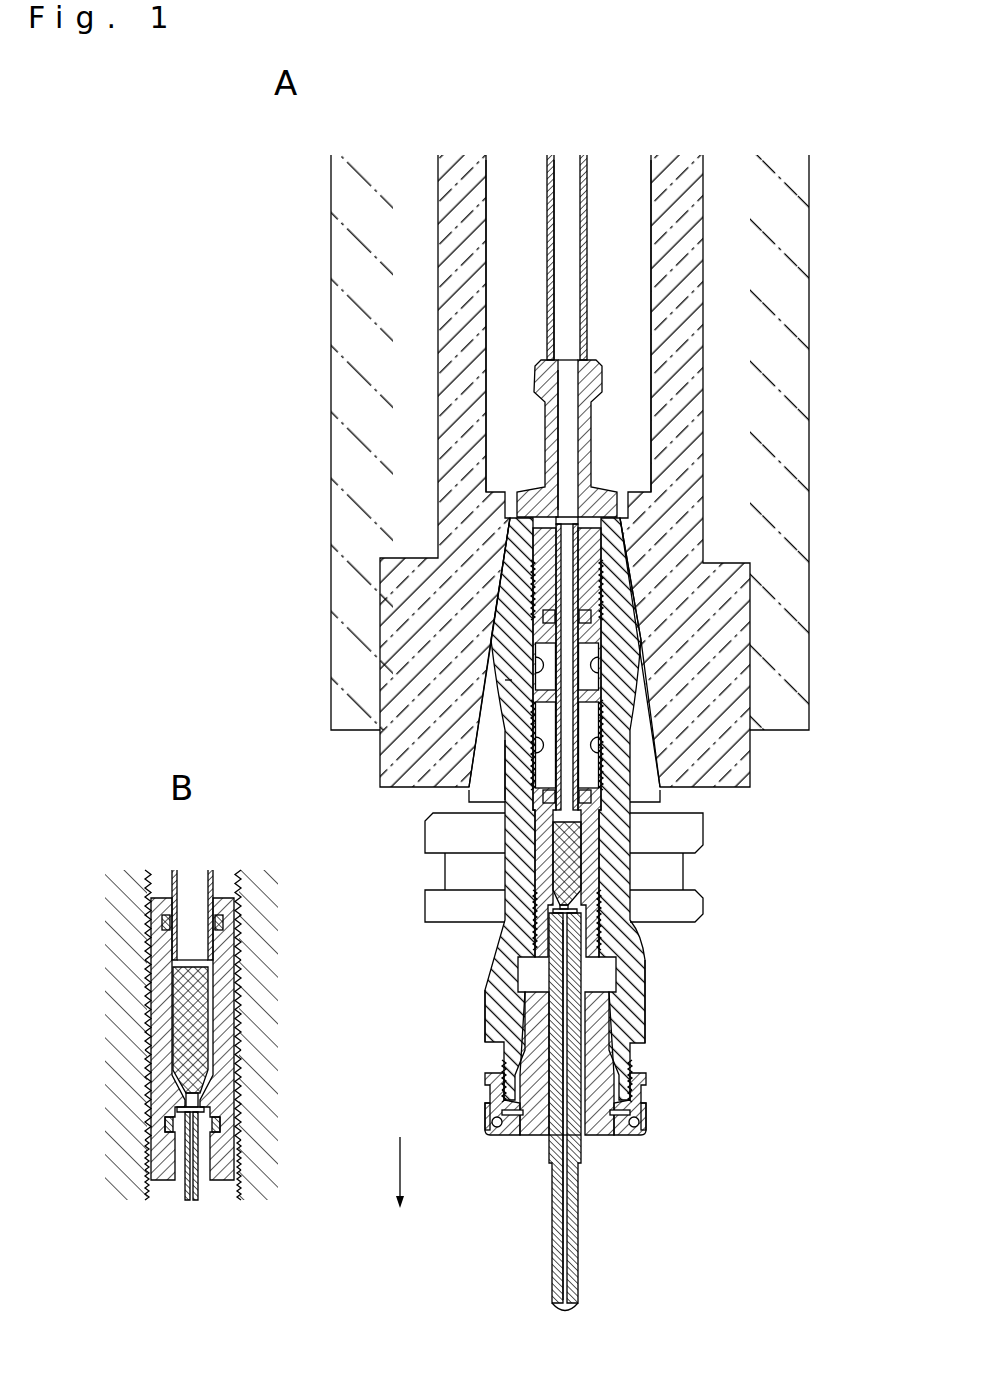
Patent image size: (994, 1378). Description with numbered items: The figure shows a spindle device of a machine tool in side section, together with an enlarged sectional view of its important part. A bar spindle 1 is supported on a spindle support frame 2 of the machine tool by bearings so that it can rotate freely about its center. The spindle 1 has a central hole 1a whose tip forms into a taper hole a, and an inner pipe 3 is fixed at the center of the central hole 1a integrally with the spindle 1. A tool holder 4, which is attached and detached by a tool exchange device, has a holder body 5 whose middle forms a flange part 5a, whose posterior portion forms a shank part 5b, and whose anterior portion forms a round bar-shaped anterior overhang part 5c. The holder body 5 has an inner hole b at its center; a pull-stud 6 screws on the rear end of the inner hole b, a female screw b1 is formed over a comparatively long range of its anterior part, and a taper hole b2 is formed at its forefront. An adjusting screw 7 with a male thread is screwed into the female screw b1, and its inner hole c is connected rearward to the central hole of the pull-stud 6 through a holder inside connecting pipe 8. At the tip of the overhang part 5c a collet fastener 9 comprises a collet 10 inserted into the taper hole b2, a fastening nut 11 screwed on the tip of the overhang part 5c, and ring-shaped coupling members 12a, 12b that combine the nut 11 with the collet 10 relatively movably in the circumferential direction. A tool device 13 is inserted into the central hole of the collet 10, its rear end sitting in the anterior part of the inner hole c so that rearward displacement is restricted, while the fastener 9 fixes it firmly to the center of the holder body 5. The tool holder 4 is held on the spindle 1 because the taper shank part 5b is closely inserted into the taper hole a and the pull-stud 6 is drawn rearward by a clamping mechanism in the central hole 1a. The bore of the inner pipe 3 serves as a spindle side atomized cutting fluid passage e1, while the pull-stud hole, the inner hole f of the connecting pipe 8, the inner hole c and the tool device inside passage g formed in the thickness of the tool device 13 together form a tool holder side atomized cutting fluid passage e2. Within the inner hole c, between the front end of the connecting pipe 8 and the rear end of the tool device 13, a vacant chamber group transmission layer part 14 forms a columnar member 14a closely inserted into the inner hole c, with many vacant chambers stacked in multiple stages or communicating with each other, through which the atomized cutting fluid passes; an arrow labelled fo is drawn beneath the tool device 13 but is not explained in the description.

The bar spindle 1 is at (432, 412).
The central hole 1a is at (486, 328).
The spindle support frame 2 is at (331, 378).
The inner pipe 3 is at (587, 240).
The tool holder 4 is at (402, 830).
The holder body 5 is at (440, 859).
The flange part 5a is at (706, 913).
The shank part 5b is at (497, 627).
The anterior overhang part 5c is at (500, 985).
The pull-stud 6 is at (586, 437).
The adjusting screw 7 is at (533, 823).
The holder inside connecting pipe 8 is at (580, 670).
The collet fastener 9 is at (668, 1081).
The collet 10 is at (600, 1023).
The fastening nut 11 is at (645, 1112).
The ring-shape coupling member 12a is at (613, 1138).
The ring-shape coupling member 12b is at (647, 1137).
The tool device 13 is at (552, 1253).
The vacant chamber group transmission layer part 14 is at (537, 868).
The columnar member 14a is at (268, 1125).
The taper hole a is at (660, 772).
The inner hole b is at (567, 383).
The female screw b1 is at (520, 757).
The taper hole b2 is at (533, 1138).
The inner hole c is at (537, 900).
The spindle side atomized cutting fluid passage e1 is at (552, 237).
The tool holder side atomized cutting fluid passage e2 is at (603, 535).
The inner hole f is at (563, 716).
The discharge flow fo is at (393, 1194).
The tool device inside passage g is at (572, 1226).